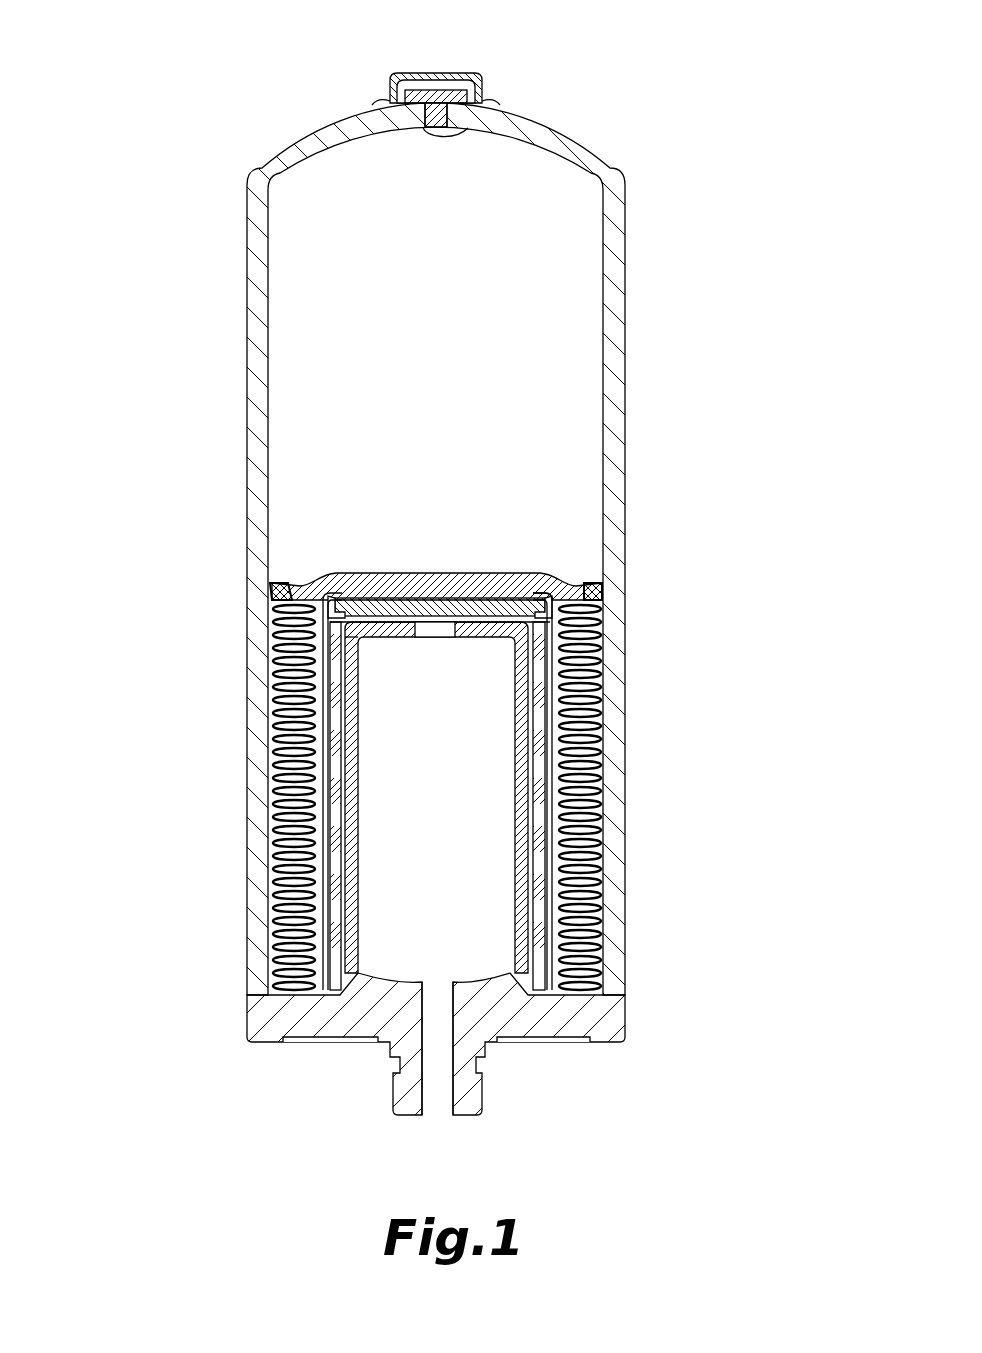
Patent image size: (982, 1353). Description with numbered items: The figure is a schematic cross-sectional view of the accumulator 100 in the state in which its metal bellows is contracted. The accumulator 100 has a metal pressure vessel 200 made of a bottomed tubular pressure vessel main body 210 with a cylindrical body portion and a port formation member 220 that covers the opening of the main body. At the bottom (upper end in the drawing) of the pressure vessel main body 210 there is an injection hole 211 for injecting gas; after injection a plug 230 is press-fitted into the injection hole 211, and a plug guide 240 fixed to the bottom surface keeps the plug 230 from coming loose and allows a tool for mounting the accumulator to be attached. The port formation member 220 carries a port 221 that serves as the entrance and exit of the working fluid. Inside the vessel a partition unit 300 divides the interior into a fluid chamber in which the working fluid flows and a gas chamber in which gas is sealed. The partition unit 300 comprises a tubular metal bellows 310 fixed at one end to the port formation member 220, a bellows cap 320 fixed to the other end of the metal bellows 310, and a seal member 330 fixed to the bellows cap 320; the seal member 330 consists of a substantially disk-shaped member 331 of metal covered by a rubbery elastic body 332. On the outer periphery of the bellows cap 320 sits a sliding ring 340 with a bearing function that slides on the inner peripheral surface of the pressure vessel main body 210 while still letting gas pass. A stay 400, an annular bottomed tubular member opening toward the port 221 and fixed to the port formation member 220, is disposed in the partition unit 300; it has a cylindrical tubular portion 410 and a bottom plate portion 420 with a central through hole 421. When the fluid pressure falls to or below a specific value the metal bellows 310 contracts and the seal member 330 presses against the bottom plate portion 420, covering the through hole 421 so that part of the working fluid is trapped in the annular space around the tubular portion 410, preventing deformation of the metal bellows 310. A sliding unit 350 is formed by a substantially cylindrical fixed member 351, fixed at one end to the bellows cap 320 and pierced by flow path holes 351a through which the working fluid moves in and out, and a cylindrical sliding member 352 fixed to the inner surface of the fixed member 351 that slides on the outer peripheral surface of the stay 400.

The accumulator 100 is at (647, 117).
The pressure vessel 200 is at (232, 365).
The pressure vessel main body 210 is at (628, 296).
The injection hole 211 is at (470, 132).
The port formation member 220 is at (302, 1050).
The port 221 is at (448, 1073).
The plug 230 is at (445, 108).
The plug guide 240 is at (406, 73).
The partition unit 300 is at (368, 548).
The metal bellows 310 is at (290, 838).
The bellows cap 320 is at (495, 583).
The seal member 330 is at (368, 580).
The substantially disk-shaped member 331 is at (457, 592).
The rubbery elastic body 332 is at (415, 596).
The sliding ring 340 is at (590, 585).
The sliding unit 350 is at (592, 653).
The fixed member 351 is at (322, 775).
The flow path holes 351a is at (598, 678).
The sliding member 352 is at (598, 927).
The stay 400 is at (347, 880).
The tubular portion 410 is at (530, 840).
The bottom plate portion 420 is at (433, 640).
The through hole 421 is at (332, 645).